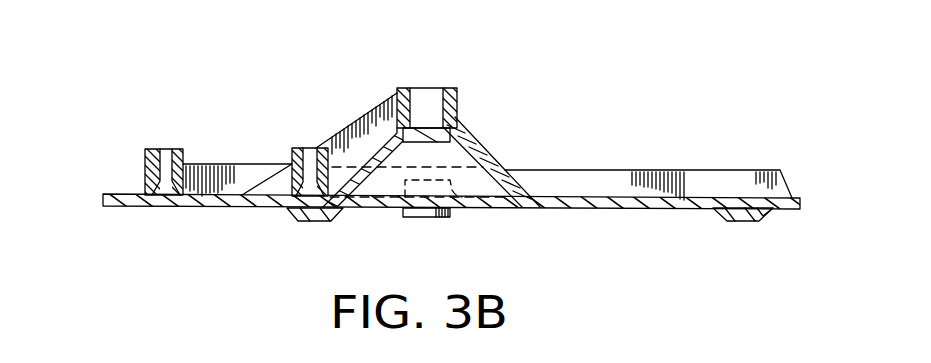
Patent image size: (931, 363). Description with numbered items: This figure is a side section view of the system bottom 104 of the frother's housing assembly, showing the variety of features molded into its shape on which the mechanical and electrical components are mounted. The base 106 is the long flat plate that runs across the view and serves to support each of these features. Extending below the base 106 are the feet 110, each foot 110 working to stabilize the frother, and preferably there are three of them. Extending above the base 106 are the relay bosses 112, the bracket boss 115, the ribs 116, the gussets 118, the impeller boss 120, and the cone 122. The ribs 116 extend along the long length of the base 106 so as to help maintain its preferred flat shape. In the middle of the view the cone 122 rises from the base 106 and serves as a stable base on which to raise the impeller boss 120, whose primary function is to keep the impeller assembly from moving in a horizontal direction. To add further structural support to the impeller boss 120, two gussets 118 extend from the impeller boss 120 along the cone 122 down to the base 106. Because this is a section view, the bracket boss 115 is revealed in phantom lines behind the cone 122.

The system bottom 104 is at (600, 125).
The base 106 is at (597, 208).
The foot 110 is at (312, 218).
The relay bosses 112 is at (292, 153).
The bracket boss 115 is at (467, 208).
The ribs 116 is at (710, 185).
The gussets 118 is at (363, 120).
The impeller boss 120 is at (458, 108).
The cone 122 is at (498, 172).